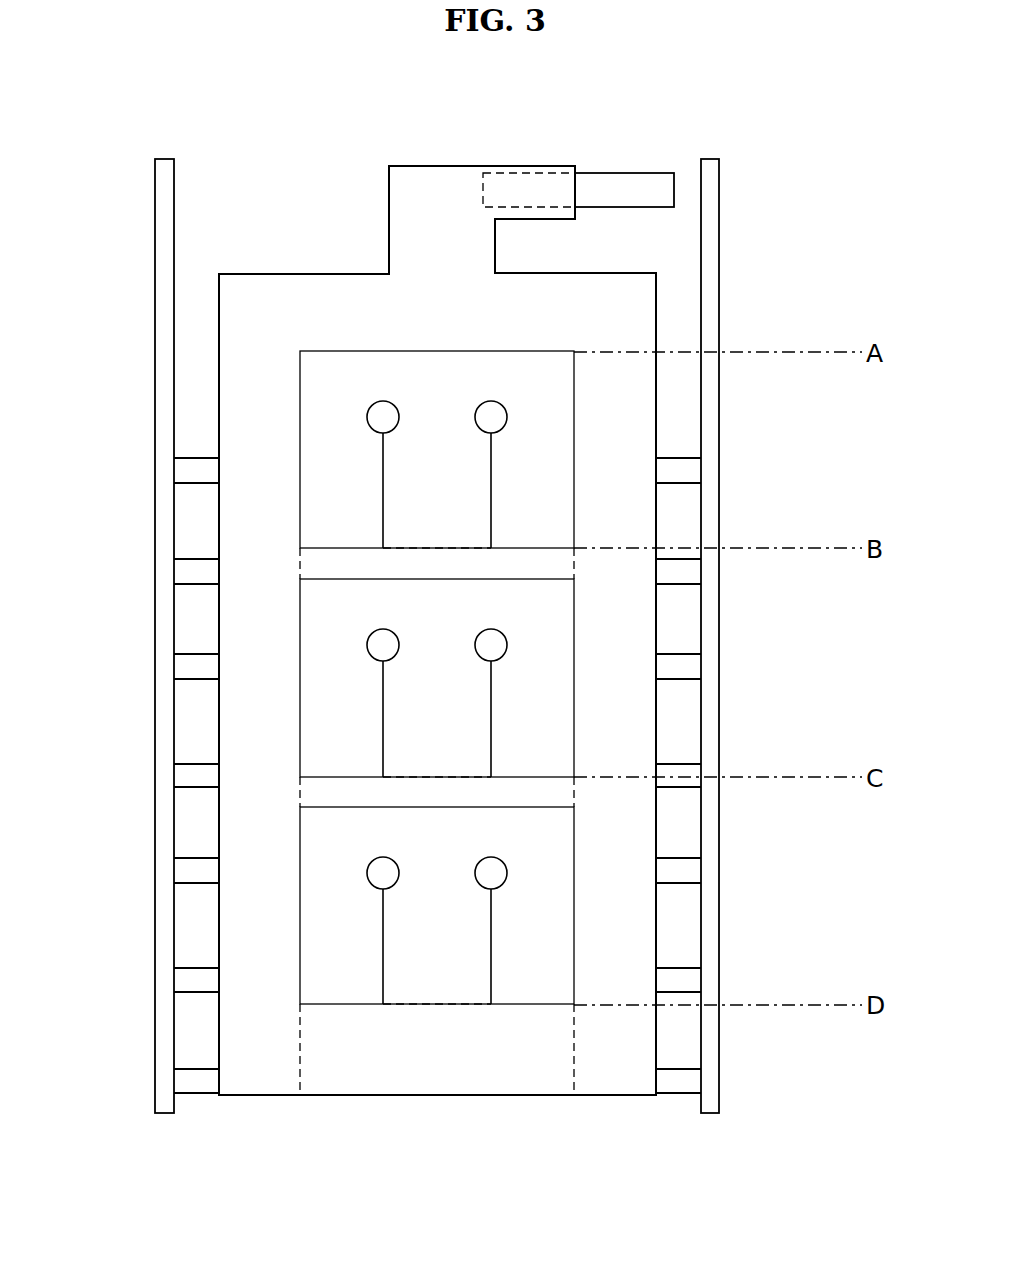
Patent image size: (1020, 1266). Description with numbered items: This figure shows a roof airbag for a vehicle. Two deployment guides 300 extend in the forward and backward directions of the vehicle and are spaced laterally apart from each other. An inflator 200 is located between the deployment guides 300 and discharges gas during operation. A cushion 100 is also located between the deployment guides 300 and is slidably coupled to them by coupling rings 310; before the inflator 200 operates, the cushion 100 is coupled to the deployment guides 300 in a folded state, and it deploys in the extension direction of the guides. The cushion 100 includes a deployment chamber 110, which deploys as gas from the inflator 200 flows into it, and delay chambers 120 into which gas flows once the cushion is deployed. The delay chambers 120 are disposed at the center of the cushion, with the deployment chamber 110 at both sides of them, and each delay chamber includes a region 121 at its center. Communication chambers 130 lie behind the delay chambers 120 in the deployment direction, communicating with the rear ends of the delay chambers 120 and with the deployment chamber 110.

The cushion 100 is at (618, 1096).
The deployment chamber 110 is at (462, 677).
The delay chambers 120 is at (345, 513).
The cell unit frame 121 is at (300, 418).
The communication chambers 130 is at (536, 560).
The inflator 200 is at (623, 172).
The deployment guides 300 is at (719, 223).
The coupling rings 310 is at (196, 1094).